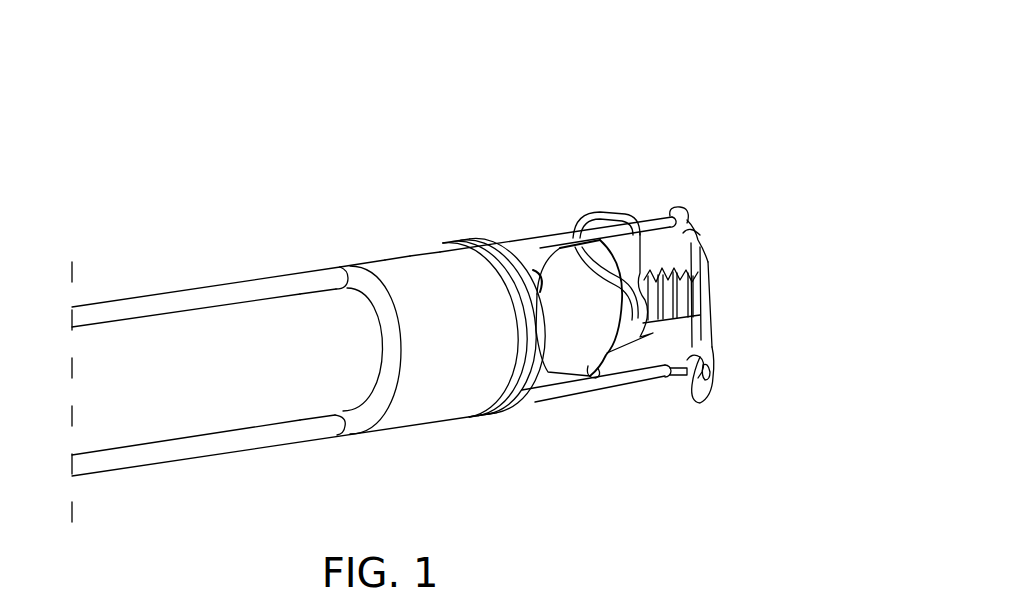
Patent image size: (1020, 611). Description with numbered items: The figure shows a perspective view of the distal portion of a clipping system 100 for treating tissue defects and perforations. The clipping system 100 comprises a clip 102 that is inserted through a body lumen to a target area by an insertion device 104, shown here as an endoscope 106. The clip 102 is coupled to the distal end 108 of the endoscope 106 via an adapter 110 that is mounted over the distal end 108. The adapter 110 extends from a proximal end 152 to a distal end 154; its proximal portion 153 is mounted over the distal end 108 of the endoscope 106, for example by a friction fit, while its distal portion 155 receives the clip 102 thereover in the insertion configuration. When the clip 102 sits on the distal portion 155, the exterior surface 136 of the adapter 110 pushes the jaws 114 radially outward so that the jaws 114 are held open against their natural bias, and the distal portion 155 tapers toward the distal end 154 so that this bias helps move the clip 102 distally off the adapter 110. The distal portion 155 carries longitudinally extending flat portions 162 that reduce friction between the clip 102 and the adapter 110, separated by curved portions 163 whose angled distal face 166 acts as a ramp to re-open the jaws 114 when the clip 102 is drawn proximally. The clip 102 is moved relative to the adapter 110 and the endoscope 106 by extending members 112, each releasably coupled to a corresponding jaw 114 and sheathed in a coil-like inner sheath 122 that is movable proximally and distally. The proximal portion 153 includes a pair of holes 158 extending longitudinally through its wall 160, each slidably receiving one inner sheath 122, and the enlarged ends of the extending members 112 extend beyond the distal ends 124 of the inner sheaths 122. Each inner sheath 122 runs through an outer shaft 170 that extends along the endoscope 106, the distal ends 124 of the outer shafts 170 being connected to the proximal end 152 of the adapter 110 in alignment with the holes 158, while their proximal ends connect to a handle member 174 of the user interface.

The clipping system 100 is at (266, 178).
The clip 102 is at (722, 290).
The insertion device 104 is at (172, 240).
The endoscope 106 is at (155, 400).
The distal end of the endoscope 108 is at (360, 333).
The adapter 110 is at (452, 263).
The extending members 112 is at (682, 210).
The jaws 114 is at (698, 243).
The inner sheath 122 is at (608, 230).
The distal ends 124 is at (668, 207).
The exterior surface of the adapter 136 is at (399, 267).
The proximal end of the adapter 152 is at (369, 267).
The proximal portion of the adapter 153 is at (421, 267).
The distal end of the adapter 154 is at (597, 350).
The distal portion of the adapter 155 is at (562, 291).
The holes 158 is at (347, 265).
The wall 160 is at (377, 400).
The flat portions 162 is at (563, 342).
The curved portions 163 is at (548, 283).
The distal face 166 is at (622, 363).
The outer shaft 170 is at (197, 295).
The handle member 174 is at (337, 273).